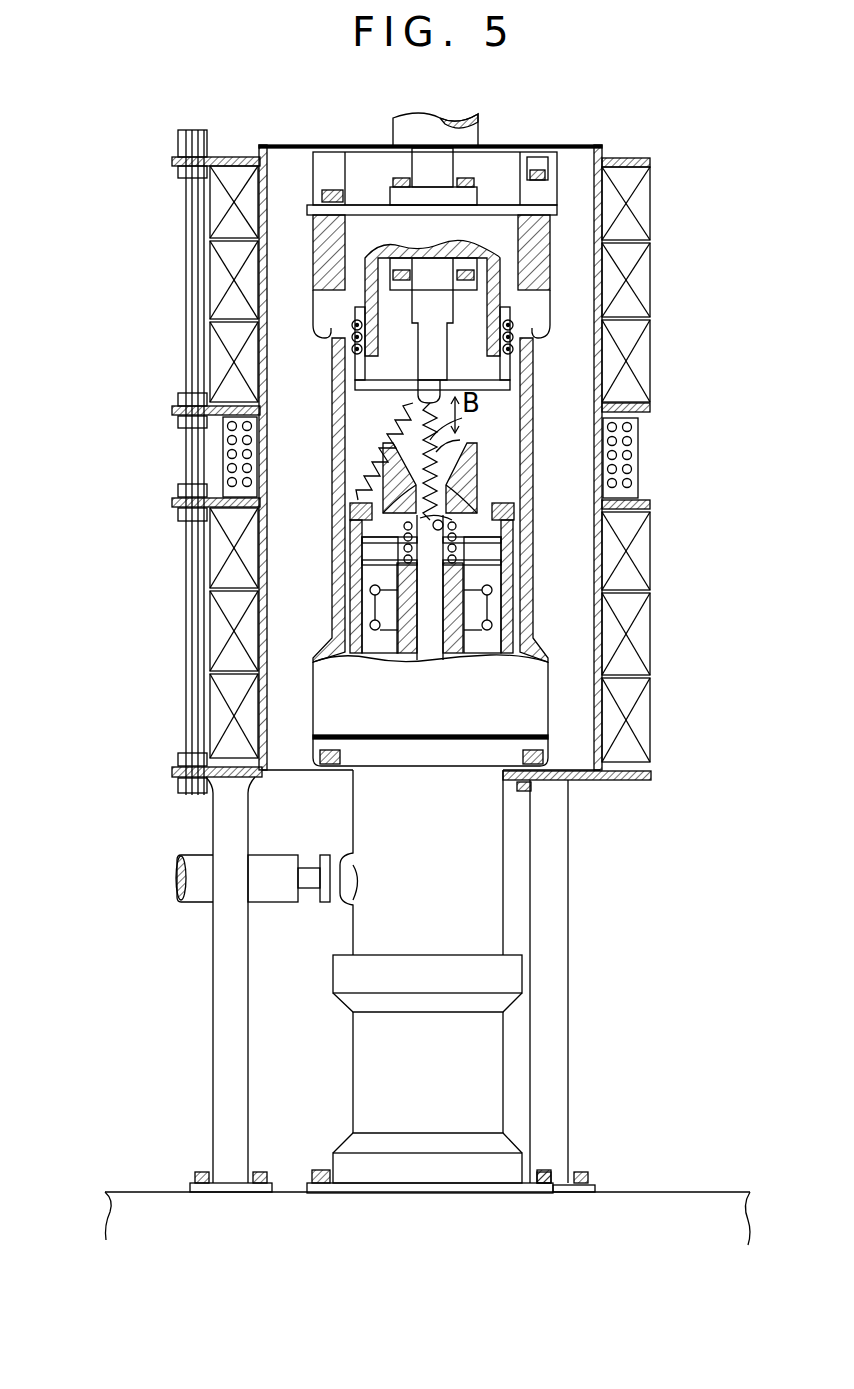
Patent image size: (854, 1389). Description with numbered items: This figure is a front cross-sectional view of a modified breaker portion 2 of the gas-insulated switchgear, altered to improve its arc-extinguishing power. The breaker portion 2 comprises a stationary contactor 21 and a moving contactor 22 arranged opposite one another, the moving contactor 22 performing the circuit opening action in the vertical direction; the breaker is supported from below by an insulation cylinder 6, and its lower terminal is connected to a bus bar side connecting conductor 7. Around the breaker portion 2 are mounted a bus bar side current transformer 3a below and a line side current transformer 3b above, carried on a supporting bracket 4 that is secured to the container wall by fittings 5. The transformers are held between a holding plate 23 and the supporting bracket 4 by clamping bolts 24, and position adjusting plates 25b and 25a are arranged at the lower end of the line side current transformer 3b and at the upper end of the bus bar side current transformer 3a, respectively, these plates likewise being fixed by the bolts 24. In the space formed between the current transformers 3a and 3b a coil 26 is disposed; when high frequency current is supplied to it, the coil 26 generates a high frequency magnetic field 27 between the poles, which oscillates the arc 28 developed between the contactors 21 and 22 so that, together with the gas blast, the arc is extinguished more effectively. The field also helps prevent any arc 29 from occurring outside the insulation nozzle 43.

The breaker portion 2 is at (332, 596).
The bus bar side current transformer 3a is at (650, 552).
The line side current transformer 3b is at (650, 368).
The supporting bracket 4 is at (612, 782).
The fittings 5 is at (568, 1013).
The insulation cylinder 6 is at (353, 1064).
The bus bar side connecting conductor 7 is at (192, 905).
The stationary contactor 21 is at (443, 365).
The moving contactor 22 is at (453, 530).
The holding plate 23 is at (232, 160).
The clamping bolts 24 is at (185, 268).
The position adjusting plate 25a is at (190, 504).
The position adjusting plate 25b is at (190, 412).
The coil 26 is at (222, 457).
The high frequency magnetic field 27 is at (462, 418).
The arc 28 is at (460, 440).
The arc 29 is at (395, 430).
The insulation nozzle 43 is at (480, 468).